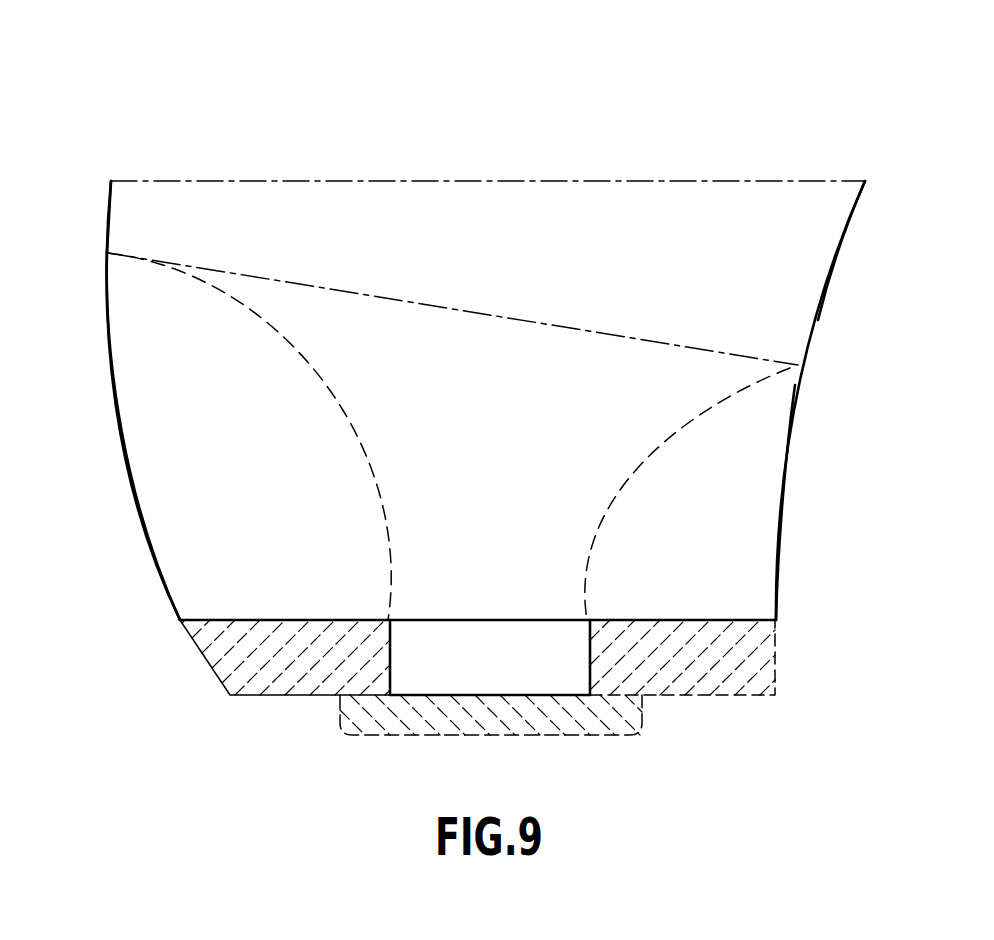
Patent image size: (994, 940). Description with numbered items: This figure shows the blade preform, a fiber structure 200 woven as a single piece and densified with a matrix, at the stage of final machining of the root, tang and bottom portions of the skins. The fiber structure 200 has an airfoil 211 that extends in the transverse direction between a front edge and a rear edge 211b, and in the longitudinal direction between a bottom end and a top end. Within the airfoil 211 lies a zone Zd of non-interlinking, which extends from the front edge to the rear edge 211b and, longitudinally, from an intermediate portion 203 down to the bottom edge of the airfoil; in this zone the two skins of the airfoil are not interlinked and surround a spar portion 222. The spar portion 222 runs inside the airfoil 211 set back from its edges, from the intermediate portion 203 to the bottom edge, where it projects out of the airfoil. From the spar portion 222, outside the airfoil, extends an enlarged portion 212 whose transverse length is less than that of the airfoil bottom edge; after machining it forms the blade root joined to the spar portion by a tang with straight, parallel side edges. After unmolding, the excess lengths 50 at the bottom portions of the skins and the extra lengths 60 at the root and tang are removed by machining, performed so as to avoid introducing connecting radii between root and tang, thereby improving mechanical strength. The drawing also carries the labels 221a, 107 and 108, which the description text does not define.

The fiber structure 200 is at (226, 102).
The airfoil 211 is at (747, 225).
The leading edge side 221a is at (107, 211).
The rear edge 211b is at (825, 300).
The first side wall 107 is at (148, 548).
The second side wall 108 is at (782, 505).
The intermediate portion 203 is at (620, 333).
The zone of non-interlinking Zd is at (472, 375).
The spar portion 222 is at (372, 462).
The enlarged portion 212 is at (483, 658).
The excess lengths 50 is at (290, 668).
The extra lengths 60 is at (378, 722).